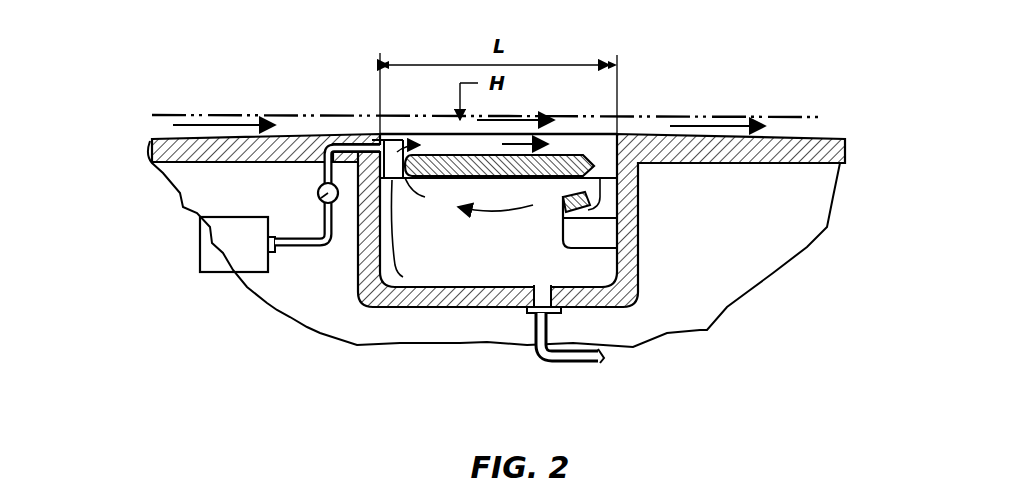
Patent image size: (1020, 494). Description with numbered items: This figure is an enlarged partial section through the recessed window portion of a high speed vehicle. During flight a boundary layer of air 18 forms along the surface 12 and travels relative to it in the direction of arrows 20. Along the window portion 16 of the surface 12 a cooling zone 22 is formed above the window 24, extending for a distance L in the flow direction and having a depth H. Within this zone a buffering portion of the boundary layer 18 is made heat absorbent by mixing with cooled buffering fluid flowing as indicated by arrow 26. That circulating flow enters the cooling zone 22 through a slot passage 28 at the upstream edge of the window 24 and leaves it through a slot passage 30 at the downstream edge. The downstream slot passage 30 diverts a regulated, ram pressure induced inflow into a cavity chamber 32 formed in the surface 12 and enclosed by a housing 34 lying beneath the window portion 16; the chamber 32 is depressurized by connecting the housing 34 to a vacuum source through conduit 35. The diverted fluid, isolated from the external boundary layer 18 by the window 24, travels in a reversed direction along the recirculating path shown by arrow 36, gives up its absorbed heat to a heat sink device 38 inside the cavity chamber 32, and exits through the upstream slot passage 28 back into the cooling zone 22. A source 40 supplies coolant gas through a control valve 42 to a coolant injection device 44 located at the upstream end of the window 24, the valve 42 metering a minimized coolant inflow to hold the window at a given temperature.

The surface 12 is at (200, 134).
The window portion 16 is at (580, 118).
The boundary layer of air 18 is at (688, 115).
The arrows 20 is at (727, 122).
The cooling zone 22 is at (445, 156).
The window 24 is at (494, 168).
The arrow 26 is at (523, 147).
The slot passage 28 is at (360, 273).
The slot passage 30 is at (600, 170).
The cavity chamber 32 is at (481, 262).
The housing 34 is at (488, 262).
The conduit 35 is at (587, 367).
The arrow 36 is at (492, 210).
The heat sink device 38 is at (590, 237).
The source 40 is at (241, 245).
The control valve 42 is at (320, 191).
The coolant injection device 44 is at (389, 148).